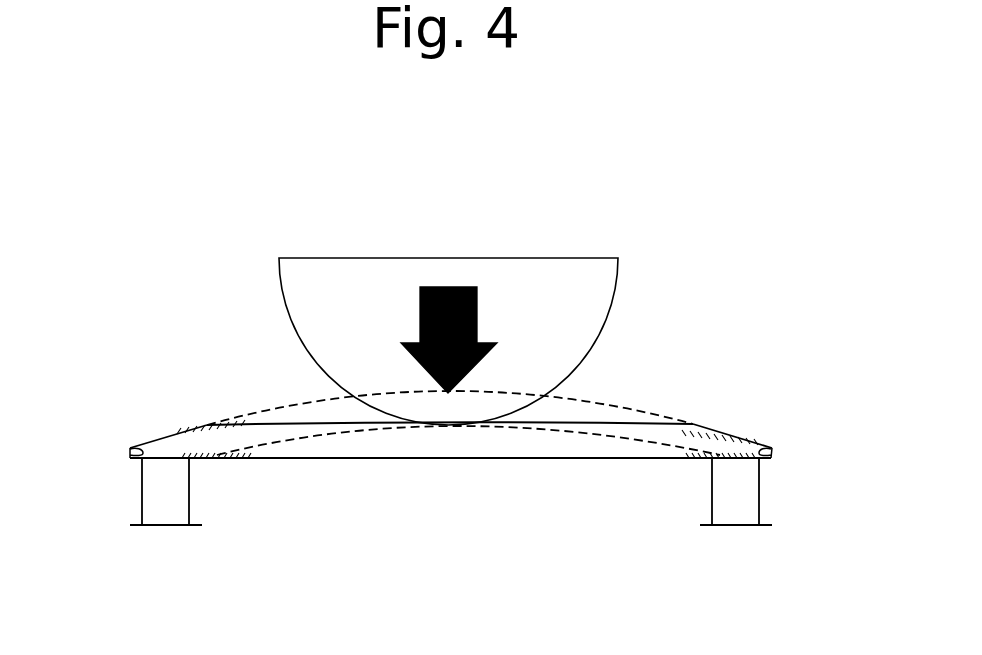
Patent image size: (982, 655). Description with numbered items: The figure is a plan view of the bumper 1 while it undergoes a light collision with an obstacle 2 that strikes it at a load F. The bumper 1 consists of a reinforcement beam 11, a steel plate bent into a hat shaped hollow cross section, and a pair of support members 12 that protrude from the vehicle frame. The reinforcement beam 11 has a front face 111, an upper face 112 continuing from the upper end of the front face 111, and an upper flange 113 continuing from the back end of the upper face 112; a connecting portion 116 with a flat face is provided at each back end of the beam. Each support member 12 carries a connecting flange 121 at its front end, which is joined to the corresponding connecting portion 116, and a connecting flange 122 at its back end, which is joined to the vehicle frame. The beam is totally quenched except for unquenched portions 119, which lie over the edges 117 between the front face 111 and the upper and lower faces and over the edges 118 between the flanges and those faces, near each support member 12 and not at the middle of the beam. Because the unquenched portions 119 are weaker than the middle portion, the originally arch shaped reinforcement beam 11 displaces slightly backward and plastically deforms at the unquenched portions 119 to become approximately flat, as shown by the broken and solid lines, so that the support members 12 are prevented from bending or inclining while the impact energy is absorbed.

The bumper 1 is at (452, 493).
The obstacle 2 is at (553, 322).
The load F is at (441, 290).
The reinforcement beam 11 is at (452, 439).
The support member 12 is at (452, 506).
The front face 111 is at (627, 421).
The upper face 112 is at (510, 445).
The upper flange 113 is at (565, 460).
The connecting portion 116 is at (155, 442).
The edge 117 is at (267, 421).
The edge 118 is at (380, 452).
The unquenched portion 119 is at (192, 427).
The connecting flange 121 is at (127, 453).
The connecting flange 122 is at (134, 527).